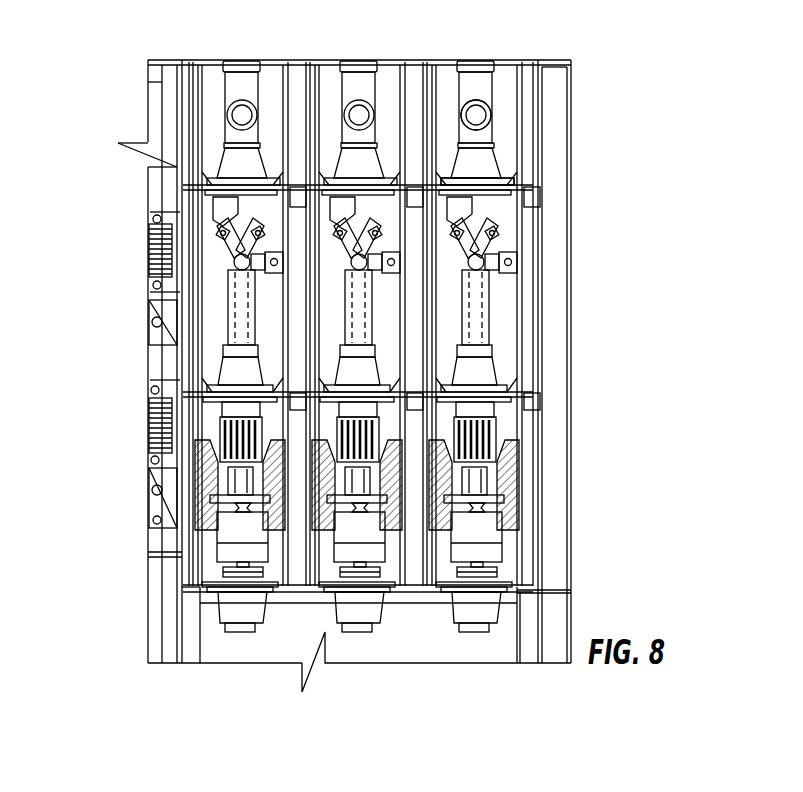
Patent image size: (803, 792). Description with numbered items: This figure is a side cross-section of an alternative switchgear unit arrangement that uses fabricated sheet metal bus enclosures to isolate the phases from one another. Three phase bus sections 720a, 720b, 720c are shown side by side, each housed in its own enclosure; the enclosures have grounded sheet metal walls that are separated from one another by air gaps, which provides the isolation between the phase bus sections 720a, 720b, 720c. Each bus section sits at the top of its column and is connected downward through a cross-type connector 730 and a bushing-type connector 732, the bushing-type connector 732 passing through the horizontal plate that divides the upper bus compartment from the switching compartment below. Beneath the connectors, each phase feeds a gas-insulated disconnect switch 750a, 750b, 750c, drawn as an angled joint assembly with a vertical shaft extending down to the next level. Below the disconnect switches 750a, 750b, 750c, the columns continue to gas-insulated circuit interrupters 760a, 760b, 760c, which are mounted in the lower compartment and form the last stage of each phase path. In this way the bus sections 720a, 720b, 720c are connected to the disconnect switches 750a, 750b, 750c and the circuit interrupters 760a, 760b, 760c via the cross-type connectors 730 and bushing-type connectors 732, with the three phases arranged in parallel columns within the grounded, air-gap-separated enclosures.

The phase bus section 720a is at (240, 108).
The phase bus section 720b is at (362, 108).
The phase bus section 720c is at (478, 108).
The cross-type connector 730 is at (492, 135).
The bushing-type connector 732 is at (500, 178).
The gas-insulated disconnect switch 750a is at (205, 262).
The gas-insulated disconnect switch 750b is at (540, 280).
The gas-insulated disconnect switch 750c is at (515, 222).
The gas-insulated circuit interrupter 760a is at (222, 432).
The gas-insulated circuit interrupter 760b is at (378, 438).
The gas-insulated circuit interrupter 760c is at (493, 433).